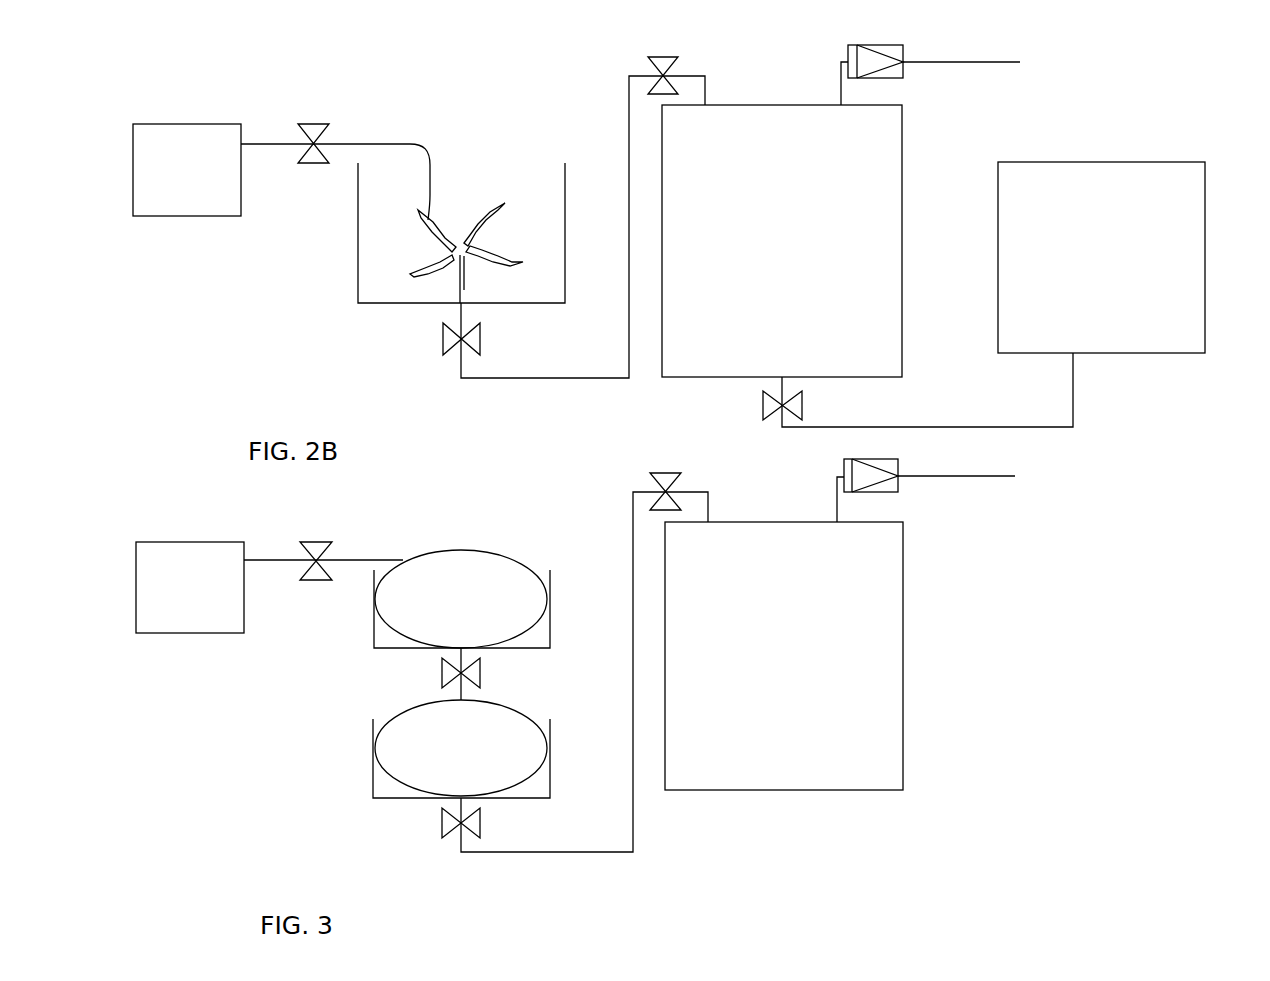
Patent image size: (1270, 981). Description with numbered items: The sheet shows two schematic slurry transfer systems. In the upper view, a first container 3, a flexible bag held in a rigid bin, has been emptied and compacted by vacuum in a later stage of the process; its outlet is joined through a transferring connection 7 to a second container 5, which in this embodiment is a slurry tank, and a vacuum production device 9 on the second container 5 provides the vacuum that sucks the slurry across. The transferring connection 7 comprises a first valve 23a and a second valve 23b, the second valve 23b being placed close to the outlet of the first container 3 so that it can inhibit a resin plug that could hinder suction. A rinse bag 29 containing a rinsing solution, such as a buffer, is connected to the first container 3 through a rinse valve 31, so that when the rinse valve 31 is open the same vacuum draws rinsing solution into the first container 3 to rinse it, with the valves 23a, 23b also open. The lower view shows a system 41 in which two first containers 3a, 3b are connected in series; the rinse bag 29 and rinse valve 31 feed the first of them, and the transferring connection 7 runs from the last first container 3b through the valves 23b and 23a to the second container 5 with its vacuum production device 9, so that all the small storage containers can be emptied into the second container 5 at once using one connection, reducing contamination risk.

In FIG. 2B, the first container 3 is at (475, 217).
In FIG. 3, the first container 3a is at (483, 552).
In FIG. 3, the first container 3b is at (500, 705).
In FIG. 2B, the second container 5 is at (903, 206).
In FIG. 3, the second container 5 is at (903, 605).
In FIG. 3, the transferring connection 7 is at (620, 853).
In FIG. 2B, the vacuum production device 9 is at (903, 63).
In FIG. 3, the vacuum production device 9 is at (898, 465).
In FIG. 3, the first valve 23a is at (668, 472).
In FIG. 3, the second valve 23b is at (447, 828).
In FIG. 3, the rinse bag 29 is at (203, 633).
In FIG. 3, the rinse valve 31 is at (310, 577).
In FIG. 3, the system 41 is at (560, 484).